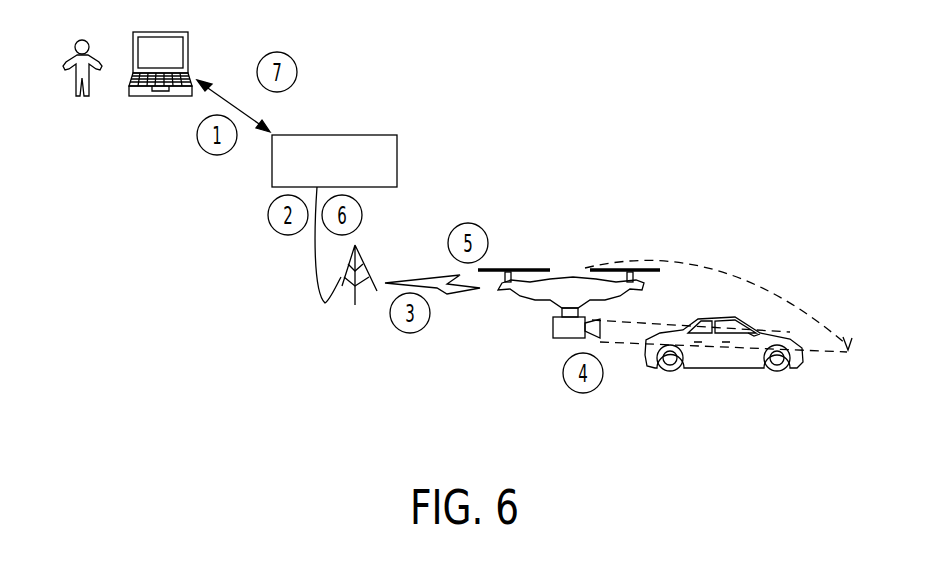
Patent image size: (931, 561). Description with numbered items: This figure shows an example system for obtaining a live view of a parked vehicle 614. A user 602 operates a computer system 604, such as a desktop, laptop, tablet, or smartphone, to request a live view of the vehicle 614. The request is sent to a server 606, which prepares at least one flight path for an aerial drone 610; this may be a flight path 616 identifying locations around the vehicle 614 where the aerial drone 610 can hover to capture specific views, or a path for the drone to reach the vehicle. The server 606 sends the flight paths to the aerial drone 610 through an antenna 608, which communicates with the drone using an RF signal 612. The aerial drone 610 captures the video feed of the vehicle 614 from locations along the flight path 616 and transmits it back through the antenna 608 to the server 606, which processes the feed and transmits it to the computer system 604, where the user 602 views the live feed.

The user 602 is at (78, 96).
The computer system 604 is at (157, 97).
The server 606 is at (397, 158).
The antenna 608 is at (360, 264).
The aerial drone 610 is at (572, 275).
The RF signal 612 is at (443, 295).
The vehicle 614 is at (790, 336).
The flight path 616 is at (738, 270).